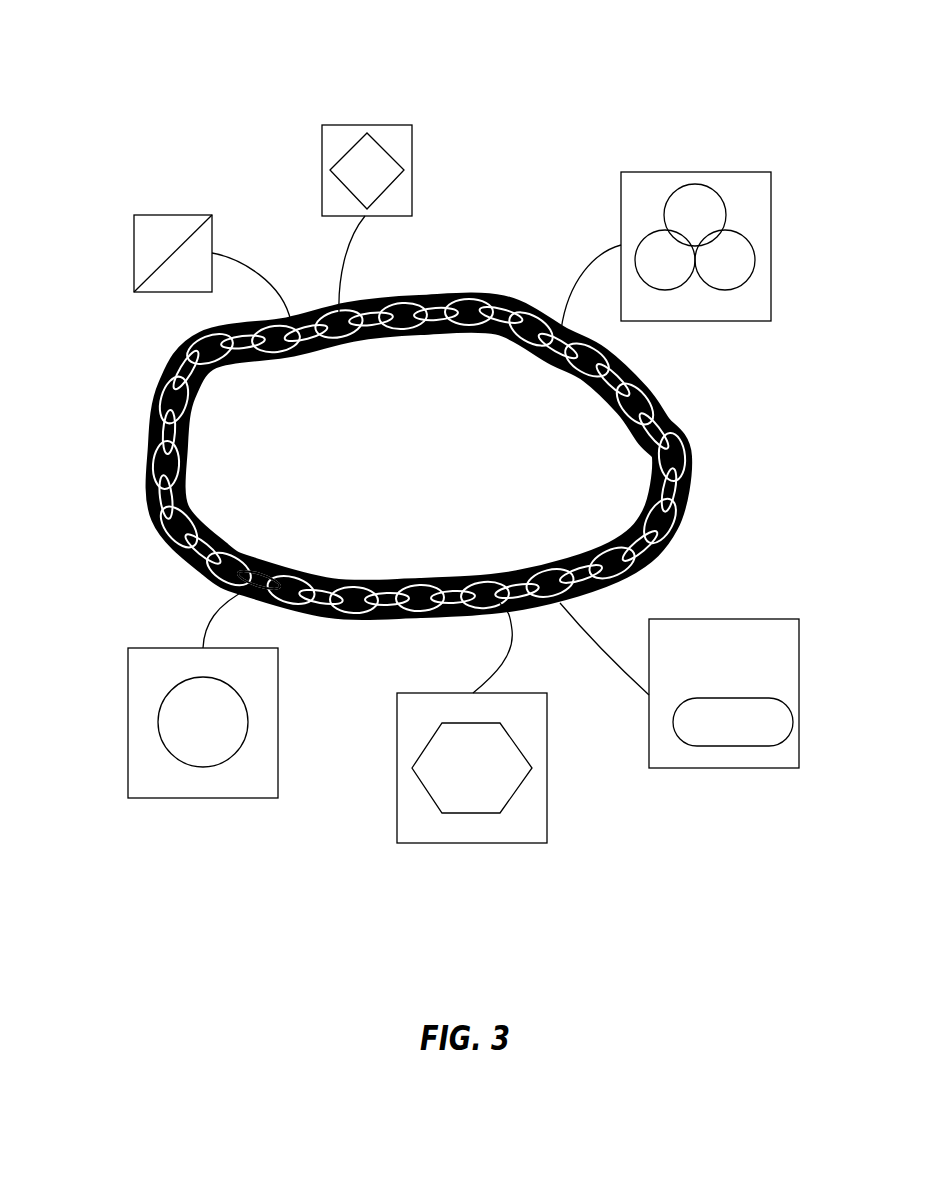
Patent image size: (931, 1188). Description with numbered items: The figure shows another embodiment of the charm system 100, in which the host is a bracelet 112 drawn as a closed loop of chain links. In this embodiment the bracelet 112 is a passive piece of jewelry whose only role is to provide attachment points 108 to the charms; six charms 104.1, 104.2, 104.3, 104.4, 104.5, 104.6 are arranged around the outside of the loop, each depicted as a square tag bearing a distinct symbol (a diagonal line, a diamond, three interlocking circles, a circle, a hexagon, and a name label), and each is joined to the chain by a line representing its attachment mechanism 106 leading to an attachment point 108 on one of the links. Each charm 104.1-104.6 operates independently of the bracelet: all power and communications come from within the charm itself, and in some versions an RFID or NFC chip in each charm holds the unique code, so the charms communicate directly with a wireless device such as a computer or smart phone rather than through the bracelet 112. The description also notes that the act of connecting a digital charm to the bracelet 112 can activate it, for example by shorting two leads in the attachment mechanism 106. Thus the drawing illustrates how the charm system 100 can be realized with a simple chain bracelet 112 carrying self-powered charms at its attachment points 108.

The charm system 100 is at (180, 75).
The charm 104.1 is at (134, 215).
The charm 104.2 is at (321, 125).
The charm 104.3 is at (621, 181).
The charm 104.4 is at (128, 648).
The charm 104.5 is at (397, 693).
The charm 104.6 is at (649, 738).
The attachment mechanism 106 is at (207, 620).
The attachment point 108 is at (250, 578).
The bracelet 112 is at (152, 455).